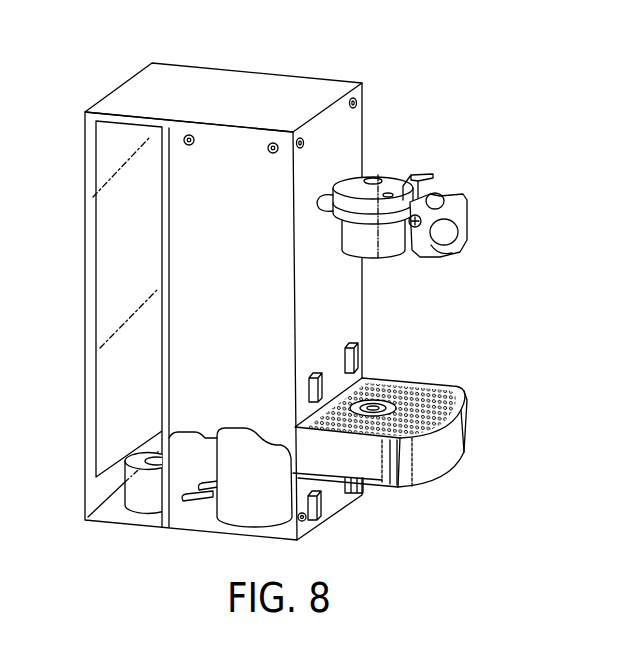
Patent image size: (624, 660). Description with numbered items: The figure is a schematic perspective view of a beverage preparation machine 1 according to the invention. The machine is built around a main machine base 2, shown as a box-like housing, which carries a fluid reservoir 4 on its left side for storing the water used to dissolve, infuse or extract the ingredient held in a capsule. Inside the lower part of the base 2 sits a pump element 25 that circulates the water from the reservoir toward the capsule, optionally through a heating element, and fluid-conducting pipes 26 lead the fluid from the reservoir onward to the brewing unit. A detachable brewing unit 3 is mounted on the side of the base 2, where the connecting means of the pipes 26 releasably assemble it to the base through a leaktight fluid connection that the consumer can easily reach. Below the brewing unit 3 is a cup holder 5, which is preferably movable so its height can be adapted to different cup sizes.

The beverage preparation machine 1 is at (274, 316).
The main machine base 2 is at (200, 316).
The detachable brewing unit 3 is at (468, 221).
The fluid reservoir 4 is at (100, 247).
The cup holder 5 is at (422, 388).
The pump element 25 is at (248, 510).
The fluid-conducting pipes 26 is at (210, 494).